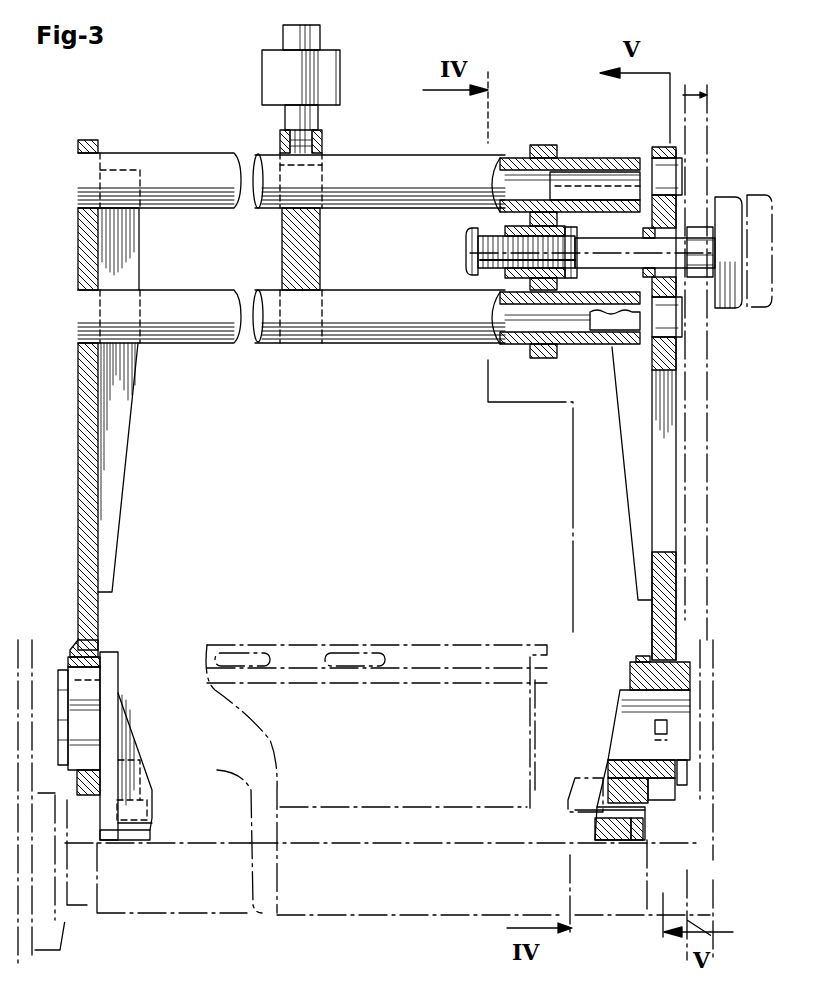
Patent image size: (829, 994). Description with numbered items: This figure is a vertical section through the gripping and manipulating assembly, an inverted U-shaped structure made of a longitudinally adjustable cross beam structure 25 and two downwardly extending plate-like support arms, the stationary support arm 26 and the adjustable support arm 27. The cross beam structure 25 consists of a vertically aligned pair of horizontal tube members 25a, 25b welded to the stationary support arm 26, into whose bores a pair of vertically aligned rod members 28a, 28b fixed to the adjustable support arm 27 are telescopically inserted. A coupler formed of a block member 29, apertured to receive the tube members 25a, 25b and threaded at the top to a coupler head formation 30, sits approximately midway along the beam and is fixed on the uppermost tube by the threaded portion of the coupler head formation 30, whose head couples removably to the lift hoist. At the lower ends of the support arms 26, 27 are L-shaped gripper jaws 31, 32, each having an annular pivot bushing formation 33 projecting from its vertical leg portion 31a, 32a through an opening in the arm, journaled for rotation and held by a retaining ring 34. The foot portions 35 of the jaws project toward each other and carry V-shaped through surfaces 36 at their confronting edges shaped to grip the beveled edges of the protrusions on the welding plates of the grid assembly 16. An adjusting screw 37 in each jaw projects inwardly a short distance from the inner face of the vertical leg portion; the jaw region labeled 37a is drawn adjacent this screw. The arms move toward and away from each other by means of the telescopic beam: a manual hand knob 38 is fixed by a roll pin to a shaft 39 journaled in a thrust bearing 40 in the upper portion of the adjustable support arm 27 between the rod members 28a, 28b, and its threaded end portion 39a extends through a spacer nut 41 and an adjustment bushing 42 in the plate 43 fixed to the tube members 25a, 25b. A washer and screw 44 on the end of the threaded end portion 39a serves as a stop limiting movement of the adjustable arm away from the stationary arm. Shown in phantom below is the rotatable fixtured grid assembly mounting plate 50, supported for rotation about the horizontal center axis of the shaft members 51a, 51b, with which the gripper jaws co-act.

The grid assembly 16 is at (353, 643).
The cross beam structure 25 is at (372, 144).
The tube member 25a is at (182, 160).
The tube member 25b is at (187, 343).
The stationary support arm 26 is at (78, 468).
The adjustable support arm 27 is at (673, 584).
The rod member 28a is at (673, 178).
The rod member 28b is at (680, 328).
The block member 29 is at (313, 253).
The coupler head formation 30 is at (263, 72).
The gripper jaw 31 is at (123, 847).
The vertical leg portion 31a is at (112, 670).
The gripper jaw 32 is at (630, 838).
The vertical leg portion 32a is at (630, 667).
The annular pivot bushing formation 33 is at (67, 650).
The retaining ring 34 is at (63, 693).
The foot portion 35 is at (140, 843).
The V-shaped through surface 36 is at (150, 827).
The adjusting screw 37 is at (600, 813).
The jaw block 37a is at (602, 780).
The hand knob 38 is at (740, 197).
The shaft 39 is at (673, 250).
The threaded end portion 39a is at (490, 262).
The thrust bearing 40 is at (683, 283).
The spacer nut 41 is at (580, 228).
The adjustment bushing 42 is at (513, 228).
The plate 43 is at (540, 360).
The washer and screw 44 is at (466, 270).
The rotatable fixtured grid assembly mounting plate 50 is at (427, 917).
The shaft member 51a is at (87, 912).
The shaft member 51b is at (667, 893).